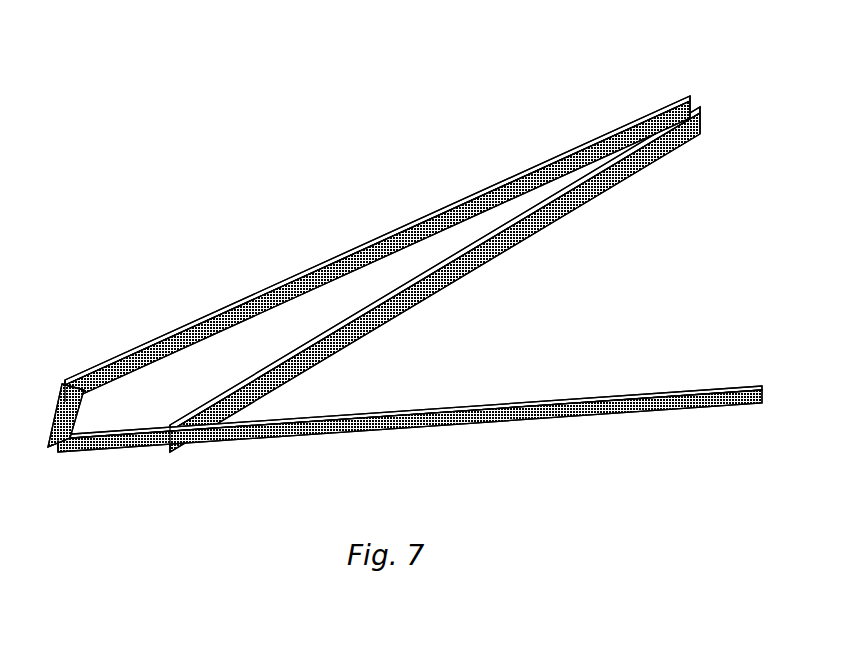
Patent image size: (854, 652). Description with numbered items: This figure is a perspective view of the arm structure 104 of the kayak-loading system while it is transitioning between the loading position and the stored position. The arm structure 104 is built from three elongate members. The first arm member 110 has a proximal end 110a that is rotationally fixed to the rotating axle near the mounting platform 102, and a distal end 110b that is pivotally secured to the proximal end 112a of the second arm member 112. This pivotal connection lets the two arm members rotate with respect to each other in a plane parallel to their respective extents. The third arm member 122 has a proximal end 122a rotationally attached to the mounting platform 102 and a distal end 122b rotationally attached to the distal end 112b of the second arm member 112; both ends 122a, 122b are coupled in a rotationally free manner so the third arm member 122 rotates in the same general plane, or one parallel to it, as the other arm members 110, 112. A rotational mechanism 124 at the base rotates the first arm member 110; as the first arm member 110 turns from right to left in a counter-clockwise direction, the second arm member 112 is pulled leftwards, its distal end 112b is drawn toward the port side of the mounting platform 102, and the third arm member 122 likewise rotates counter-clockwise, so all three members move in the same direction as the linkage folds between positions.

The mounting platform 102 is at (650, 396).
The arm structure 104 is at (128, 74).
The first arm member 110 is at (80, 420).
The proximal end of first arm member 110a is at (62, 441).
The distal end of first arm member 110b is at (64, 394).
The second arm member 112 is at (318, 265).
The proximal end of second arm member 112a is at (90, 372).
The distal end of second arm member 112b is at (638, 115).
The third arm member 122 is at (488, 258).
The proximal end of third arm member 122a is at (227, 421).
The distal end of third arm member 122b is at (677, 137).
The rotational mechanism 124 is at (80, 451).